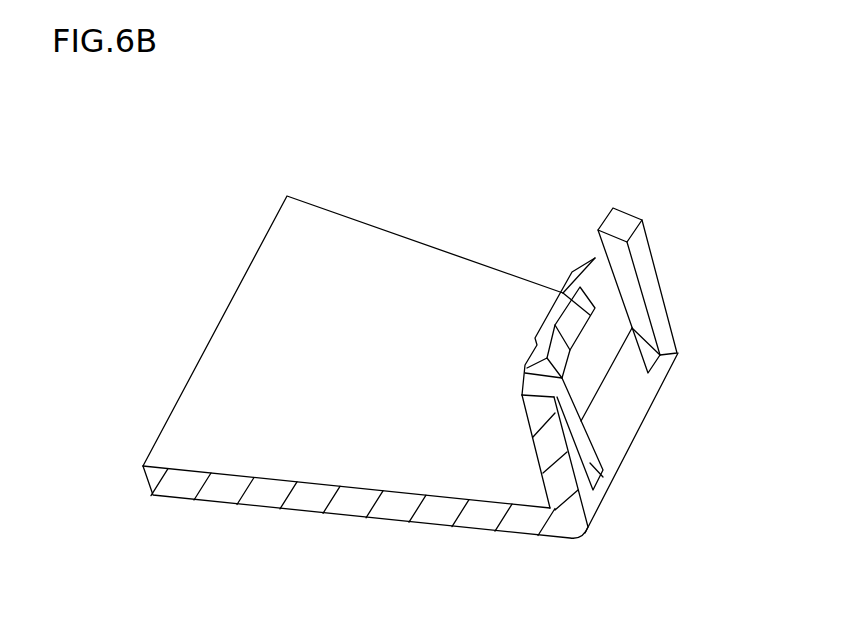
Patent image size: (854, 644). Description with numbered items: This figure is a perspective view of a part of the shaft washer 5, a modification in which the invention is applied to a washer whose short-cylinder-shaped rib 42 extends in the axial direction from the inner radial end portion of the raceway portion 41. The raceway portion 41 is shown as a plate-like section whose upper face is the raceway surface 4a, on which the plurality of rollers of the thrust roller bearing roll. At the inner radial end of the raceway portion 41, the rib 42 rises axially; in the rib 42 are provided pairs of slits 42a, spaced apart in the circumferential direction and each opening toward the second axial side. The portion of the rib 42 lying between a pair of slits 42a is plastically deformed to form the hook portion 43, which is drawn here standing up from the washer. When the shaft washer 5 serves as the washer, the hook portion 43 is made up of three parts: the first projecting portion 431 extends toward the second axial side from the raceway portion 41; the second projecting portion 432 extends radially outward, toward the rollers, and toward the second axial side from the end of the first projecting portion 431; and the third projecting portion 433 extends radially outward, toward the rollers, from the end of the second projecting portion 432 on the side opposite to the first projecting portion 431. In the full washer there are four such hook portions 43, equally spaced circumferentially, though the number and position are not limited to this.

The shaft washer 5 is at (283, 142).
The raceway portion 41 is at (258, 281).
The raceway surface 4a is at (228, 307).
The rib 42 is at (622, 224).
The slits 42a is at (645, 332).
The hook portion 43 is at (756, 336).
The first projecting portion 431 is at (612, 410).
The second projecting portion 432 is at (595, 367).
The third projecting portion 433 is at (562, 332).